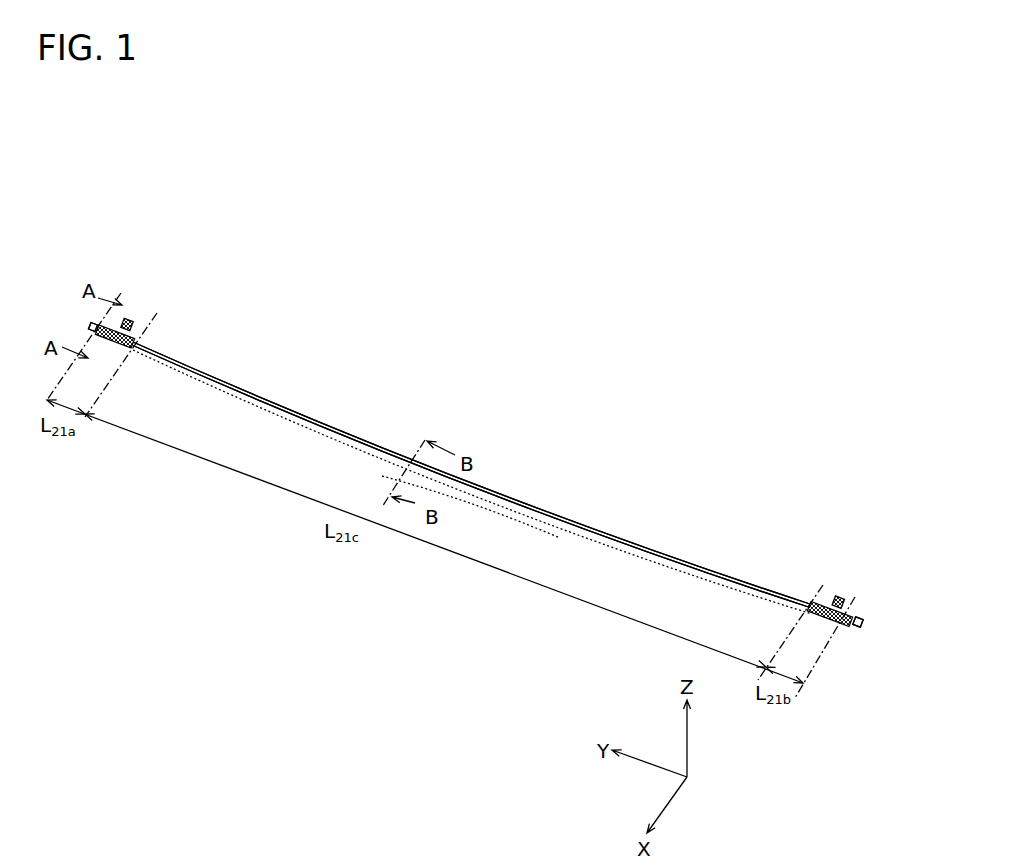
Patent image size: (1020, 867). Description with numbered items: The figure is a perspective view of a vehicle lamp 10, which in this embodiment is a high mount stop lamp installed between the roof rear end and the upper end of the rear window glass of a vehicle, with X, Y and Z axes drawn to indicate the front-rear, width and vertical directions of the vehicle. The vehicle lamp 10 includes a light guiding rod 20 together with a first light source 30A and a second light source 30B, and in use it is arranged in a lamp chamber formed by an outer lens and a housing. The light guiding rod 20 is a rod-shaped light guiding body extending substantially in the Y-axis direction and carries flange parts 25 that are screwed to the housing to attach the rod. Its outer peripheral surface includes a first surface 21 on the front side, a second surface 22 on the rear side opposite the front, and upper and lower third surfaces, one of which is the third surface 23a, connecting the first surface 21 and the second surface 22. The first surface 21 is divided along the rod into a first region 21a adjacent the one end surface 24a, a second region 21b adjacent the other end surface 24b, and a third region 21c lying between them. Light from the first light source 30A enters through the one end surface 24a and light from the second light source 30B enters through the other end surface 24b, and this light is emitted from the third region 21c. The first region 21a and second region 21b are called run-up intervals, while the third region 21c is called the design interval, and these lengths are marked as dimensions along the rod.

The vehicle lamp 10 is at (525, 337).
The light guiding rod 20 is at (589, 519).
The first surface 21 is at (353, 449).
The first region 21a is at (120, 349).
The second region 21b is at (823, 624).
The third region 21c is at (497, 505).
The second surface 22 is at (312, 419).
The third surface 23a is at (512, 504).
The one end surface 24a is at (89, 330).
The other end surface 24b is at (863, 628).
The flange part 25 is at (130, 318).
The first light source 30A is at (92, 322).
The second light source 30B is at (863, 619).